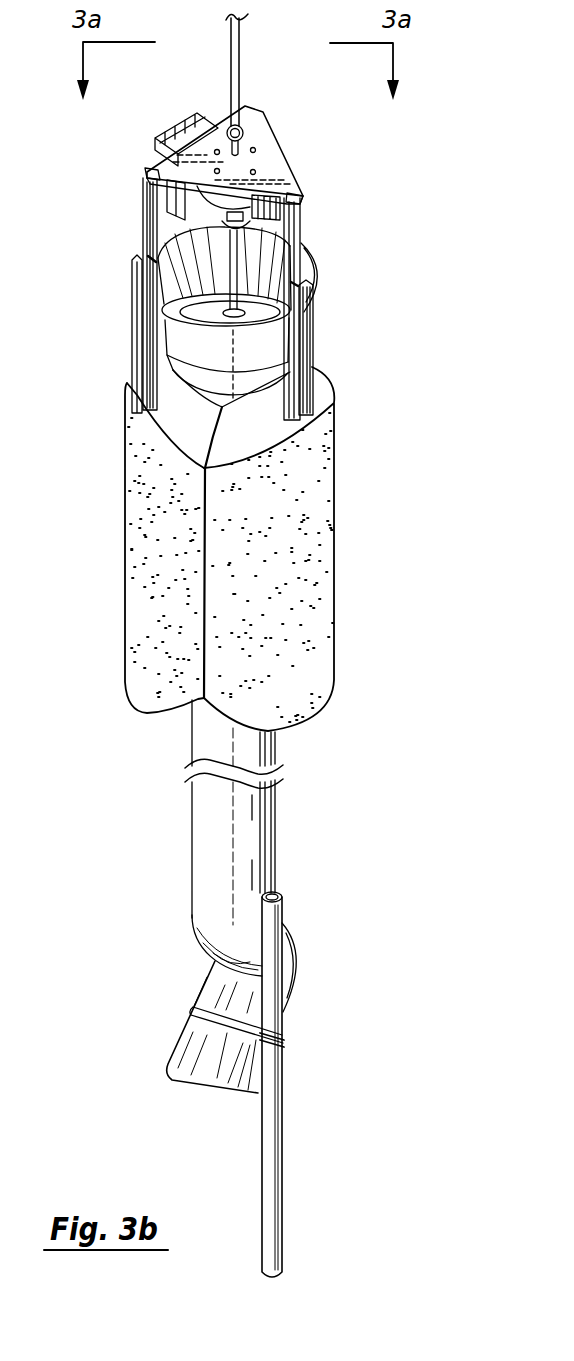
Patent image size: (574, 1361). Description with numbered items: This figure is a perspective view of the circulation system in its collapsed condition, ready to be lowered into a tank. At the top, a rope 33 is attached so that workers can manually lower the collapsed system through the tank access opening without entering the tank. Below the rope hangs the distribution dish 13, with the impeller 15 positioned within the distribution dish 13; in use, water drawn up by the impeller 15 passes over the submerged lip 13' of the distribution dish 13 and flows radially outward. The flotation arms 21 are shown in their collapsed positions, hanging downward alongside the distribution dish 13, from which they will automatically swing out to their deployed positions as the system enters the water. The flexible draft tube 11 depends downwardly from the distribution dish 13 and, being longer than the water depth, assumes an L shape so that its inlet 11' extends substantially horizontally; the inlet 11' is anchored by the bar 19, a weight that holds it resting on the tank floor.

The rope 33 is at (240, 68).
The distribution dish 13 is at (160, 317).
The lip of distribution dish 13' is at (345, 248).
The impeller 15 is at (178, 303).
The flotation arm 21 is at (137, 528).
The draft tube 11 is at (195, 856).
The inlet 11' is at (173, 1036).
The bar 19 is at (280, 1112).